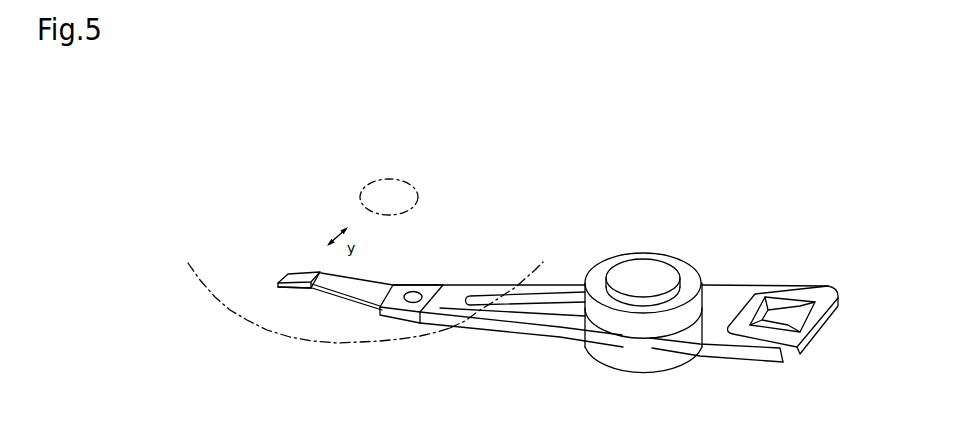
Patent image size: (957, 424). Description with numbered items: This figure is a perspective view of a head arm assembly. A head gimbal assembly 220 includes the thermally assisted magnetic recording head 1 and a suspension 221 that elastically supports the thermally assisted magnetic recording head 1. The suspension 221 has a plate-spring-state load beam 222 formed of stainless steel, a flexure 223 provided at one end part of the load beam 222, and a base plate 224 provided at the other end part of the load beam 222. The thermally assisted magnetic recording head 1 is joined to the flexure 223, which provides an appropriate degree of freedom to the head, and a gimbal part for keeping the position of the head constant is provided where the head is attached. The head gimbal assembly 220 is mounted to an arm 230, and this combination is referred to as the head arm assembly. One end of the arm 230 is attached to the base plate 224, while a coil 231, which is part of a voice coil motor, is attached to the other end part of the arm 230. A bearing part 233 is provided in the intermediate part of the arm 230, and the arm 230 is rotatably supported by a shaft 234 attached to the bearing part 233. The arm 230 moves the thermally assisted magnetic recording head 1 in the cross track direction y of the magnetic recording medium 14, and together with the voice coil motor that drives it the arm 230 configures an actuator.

The thermally assisted magnetic recording head 1 is at (303, 273).
The magnetic recording medium 14 is at (312, 338).
The head gimbal assembly 220 is at (373, 322).
The suspension 221 is at (542, 240).
The load beam 222 is at (393, 284).
The flexure 223 is at (277, 281).
The base plate 224 is at (440, 284).
The arm 230 is at (487, 326).
The coil 231 is at (825, 328).
The bearing part 233 is at (601, 266).
The shaft 234 is at (654, 268).